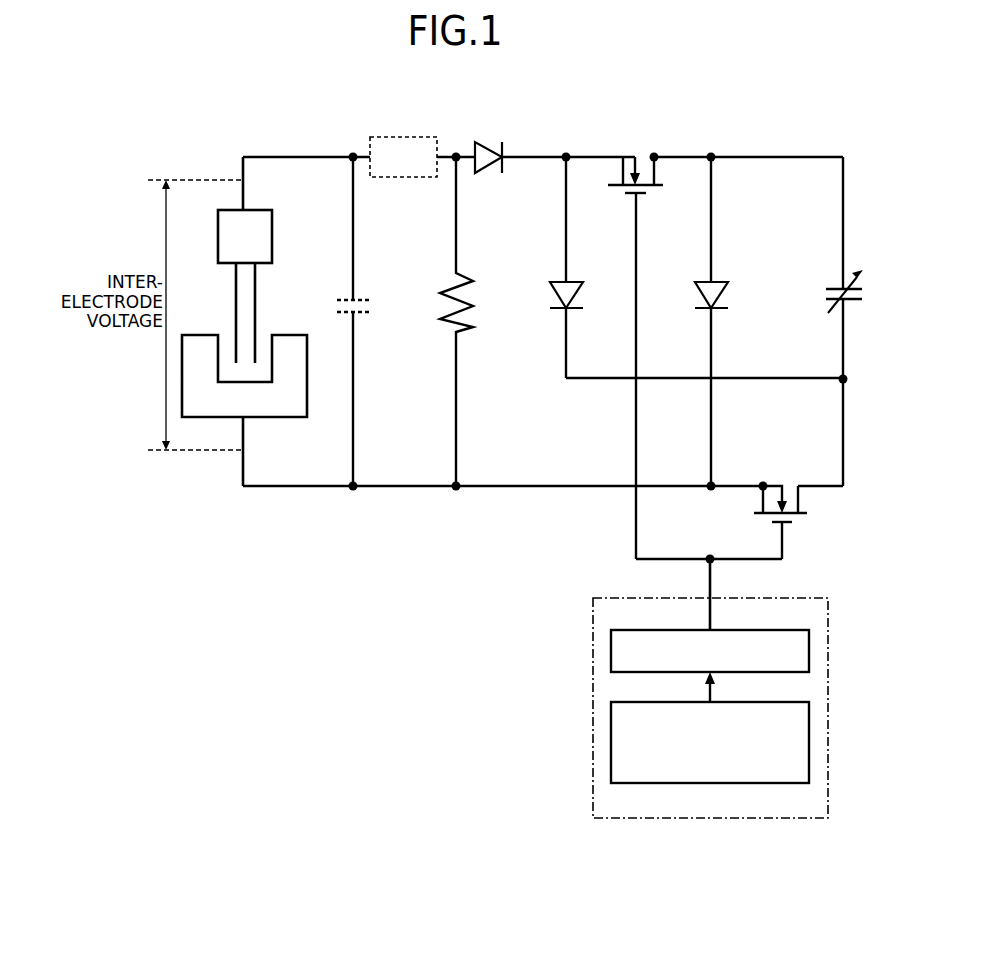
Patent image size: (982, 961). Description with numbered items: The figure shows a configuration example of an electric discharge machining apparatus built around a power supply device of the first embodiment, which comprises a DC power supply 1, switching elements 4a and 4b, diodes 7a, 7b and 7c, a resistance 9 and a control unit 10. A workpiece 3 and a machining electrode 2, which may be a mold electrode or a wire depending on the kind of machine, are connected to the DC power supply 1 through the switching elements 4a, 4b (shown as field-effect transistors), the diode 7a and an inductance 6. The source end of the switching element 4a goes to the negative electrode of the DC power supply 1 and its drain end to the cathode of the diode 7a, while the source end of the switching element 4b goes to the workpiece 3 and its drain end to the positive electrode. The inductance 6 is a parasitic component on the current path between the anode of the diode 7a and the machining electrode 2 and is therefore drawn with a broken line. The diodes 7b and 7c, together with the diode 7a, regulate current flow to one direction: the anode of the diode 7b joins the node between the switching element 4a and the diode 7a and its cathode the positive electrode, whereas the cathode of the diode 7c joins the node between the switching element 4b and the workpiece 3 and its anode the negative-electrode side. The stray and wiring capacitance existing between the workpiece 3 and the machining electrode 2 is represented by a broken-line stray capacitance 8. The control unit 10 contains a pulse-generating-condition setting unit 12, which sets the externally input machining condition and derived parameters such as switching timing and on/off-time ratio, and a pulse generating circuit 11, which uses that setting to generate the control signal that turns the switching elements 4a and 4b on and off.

The DC power supply 1 is at (837, 287).
The machining electrode 2 is at (259, 208).
The workpiece 3 is at (282, 417).
The switching element 4a is at (625, 180).
The switching element 4b is at (802, 515).
The inductance 6 is at (407, 136).
The diode 7a is at (492, 142).
The diode 7b is at (577, 280).
The diode 7c is at (703, 280).
The stray capacitance 8 is at (360, 300).
The resistance 9 is at (446, 290).
The control unit 10 is at (787, 597).
The pulse generating circuit 11 is at (809, 648).
The pulse-generating-condition setting unit 12 is at (809, 730).